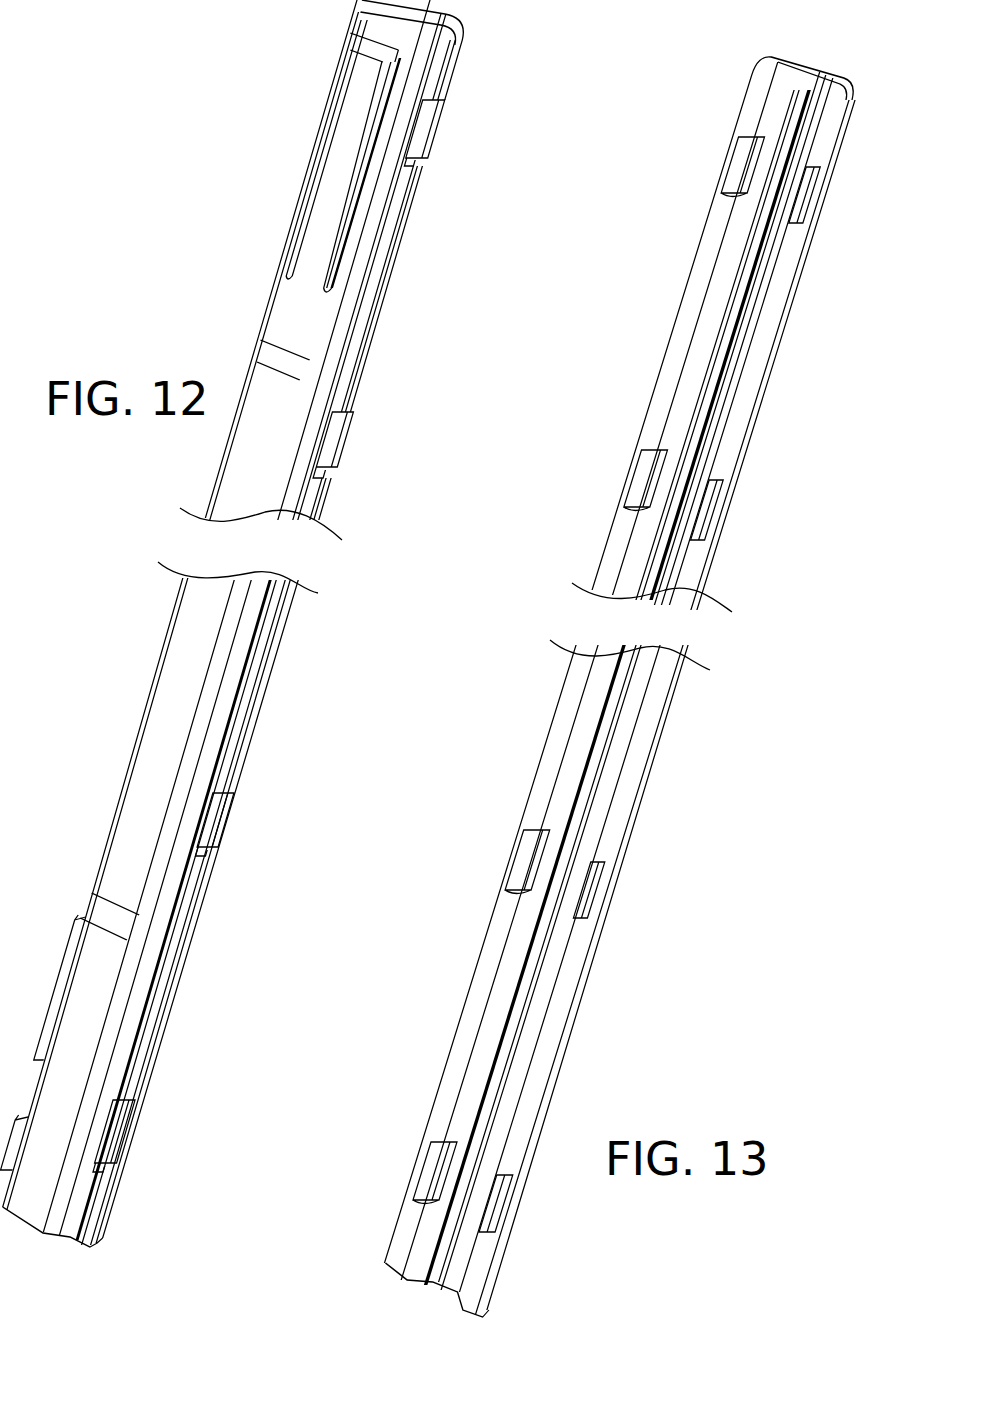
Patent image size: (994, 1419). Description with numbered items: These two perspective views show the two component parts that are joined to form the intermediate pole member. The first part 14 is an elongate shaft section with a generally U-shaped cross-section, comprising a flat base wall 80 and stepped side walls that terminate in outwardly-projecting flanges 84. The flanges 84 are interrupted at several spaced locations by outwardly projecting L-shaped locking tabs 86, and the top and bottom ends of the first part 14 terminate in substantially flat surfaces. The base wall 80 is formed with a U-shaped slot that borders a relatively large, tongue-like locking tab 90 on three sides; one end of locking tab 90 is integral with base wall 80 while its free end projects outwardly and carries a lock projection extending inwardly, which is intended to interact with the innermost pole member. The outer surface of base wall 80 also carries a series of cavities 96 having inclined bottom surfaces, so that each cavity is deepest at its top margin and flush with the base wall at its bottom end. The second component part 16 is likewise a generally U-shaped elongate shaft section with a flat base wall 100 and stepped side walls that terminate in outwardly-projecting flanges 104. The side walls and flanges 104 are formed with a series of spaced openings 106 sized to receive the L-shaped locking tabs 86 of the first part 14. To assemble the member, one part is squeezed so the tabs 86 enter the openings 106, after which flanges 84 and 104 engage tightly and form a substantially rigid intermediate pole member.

In FIG. 12, the first part 14 is at (123, 697).
In FIG. 12, the flat base wall 80 is at (247, 480).
In FIG. 12, the outwardly-projecting flanges 84 is at (273, 665).
In FIG. 12, the L-shaped locking tabs 86 is at (437, 133).
In FIG. 12, the locking tab 90 is at (356, 103).
In FIG. 12, the cavities 96 is at (288, 360).
In FIG. 13, the component part 16 is at (523, 753).
In FIG. 13, the flat base wall 100 is at (463, 1277).
In FIG. 13, the outwardly-projecting flanges 104 is at (455, 1057).
In FIG. 13, the openings 106 is at (745, 167).